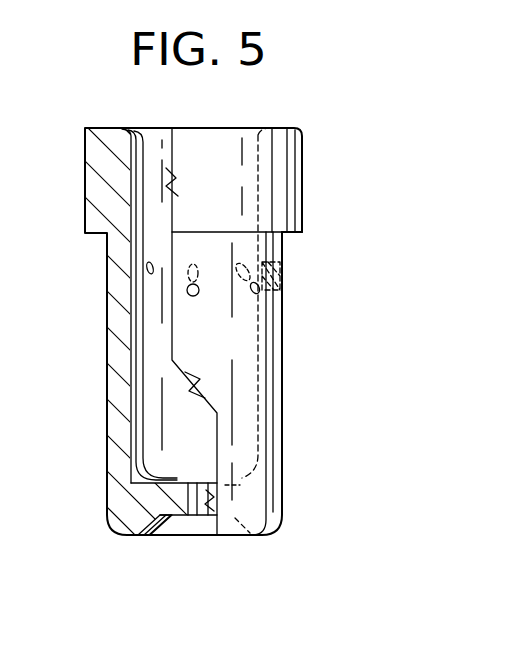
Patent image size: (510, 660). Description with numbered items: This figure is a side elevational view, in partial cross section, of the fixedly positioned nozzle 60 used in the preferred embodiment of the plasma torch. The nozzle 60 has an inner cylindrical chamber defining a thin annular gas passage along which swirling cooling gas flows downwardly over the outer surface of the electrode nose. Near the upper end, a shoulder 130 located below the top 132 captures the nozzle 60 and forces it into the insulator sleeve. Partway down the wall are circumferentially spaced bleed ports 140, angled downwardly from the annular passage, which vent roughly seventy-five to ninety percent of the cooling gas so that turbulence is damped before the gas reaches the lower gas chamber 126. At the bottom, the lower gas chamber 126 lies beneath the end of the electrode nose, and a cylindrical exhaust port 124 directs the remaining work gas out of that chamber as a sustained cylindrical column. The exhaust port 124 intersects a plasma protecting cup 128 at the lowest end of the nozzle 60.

The nozzle 60 is at (287, 380).
The cylindrical exhaust port 124 is at (197, 517).
The lower gas chamber 126 is at (177, 479).
The plasma protecting cup 128 is at (166, 525).
The shoulder 130 is at (302, 233).
The top 132 is at (295, 153).
The bleed ports 140 is at (187, 291).